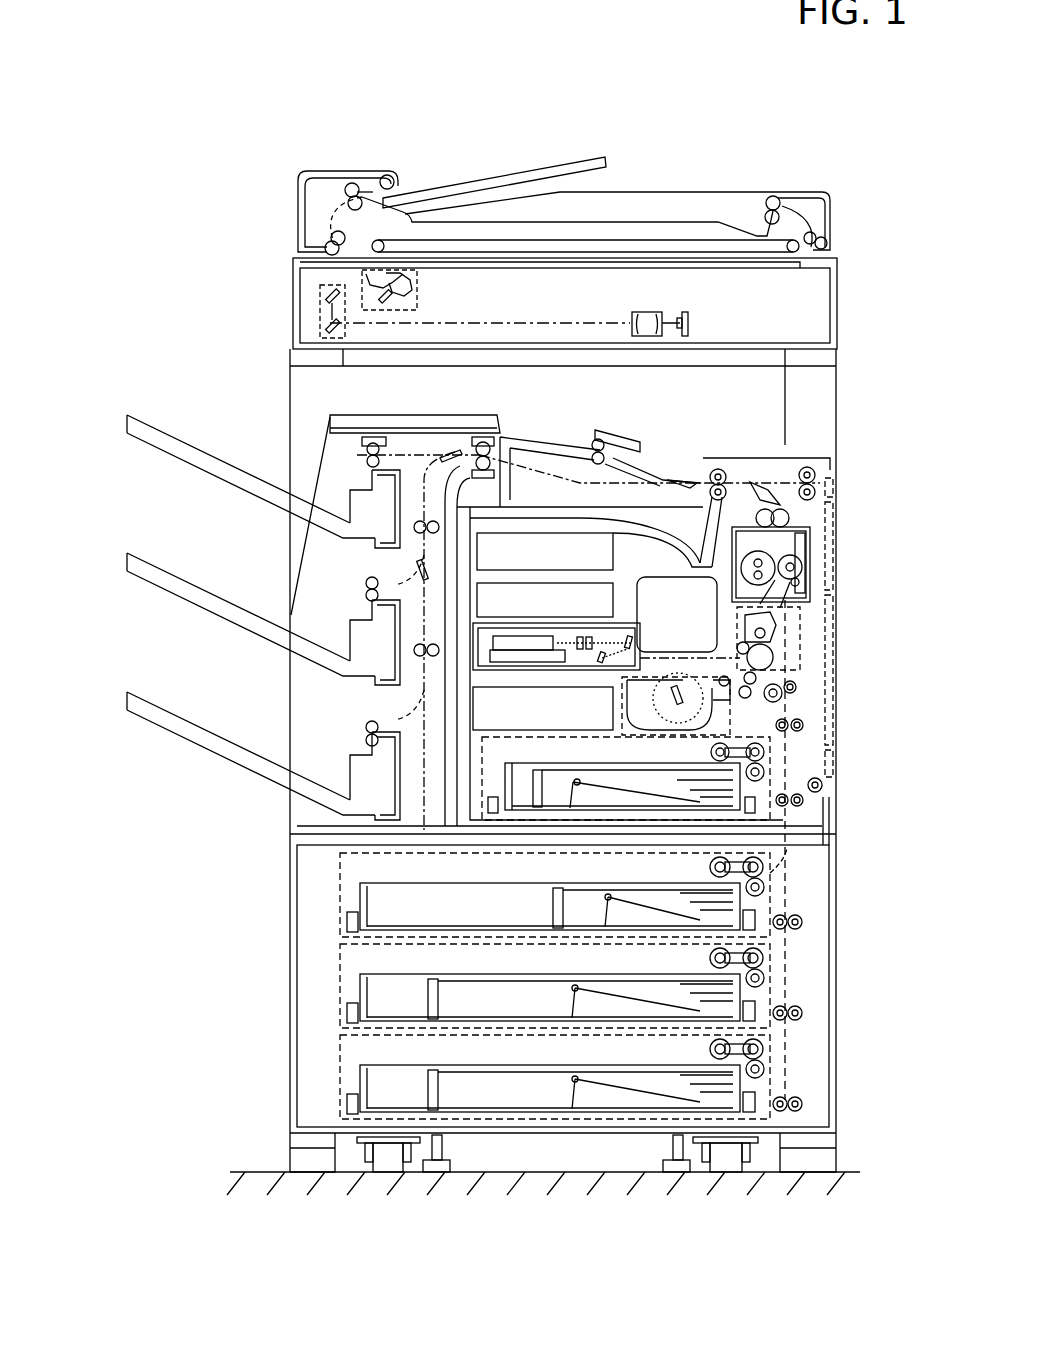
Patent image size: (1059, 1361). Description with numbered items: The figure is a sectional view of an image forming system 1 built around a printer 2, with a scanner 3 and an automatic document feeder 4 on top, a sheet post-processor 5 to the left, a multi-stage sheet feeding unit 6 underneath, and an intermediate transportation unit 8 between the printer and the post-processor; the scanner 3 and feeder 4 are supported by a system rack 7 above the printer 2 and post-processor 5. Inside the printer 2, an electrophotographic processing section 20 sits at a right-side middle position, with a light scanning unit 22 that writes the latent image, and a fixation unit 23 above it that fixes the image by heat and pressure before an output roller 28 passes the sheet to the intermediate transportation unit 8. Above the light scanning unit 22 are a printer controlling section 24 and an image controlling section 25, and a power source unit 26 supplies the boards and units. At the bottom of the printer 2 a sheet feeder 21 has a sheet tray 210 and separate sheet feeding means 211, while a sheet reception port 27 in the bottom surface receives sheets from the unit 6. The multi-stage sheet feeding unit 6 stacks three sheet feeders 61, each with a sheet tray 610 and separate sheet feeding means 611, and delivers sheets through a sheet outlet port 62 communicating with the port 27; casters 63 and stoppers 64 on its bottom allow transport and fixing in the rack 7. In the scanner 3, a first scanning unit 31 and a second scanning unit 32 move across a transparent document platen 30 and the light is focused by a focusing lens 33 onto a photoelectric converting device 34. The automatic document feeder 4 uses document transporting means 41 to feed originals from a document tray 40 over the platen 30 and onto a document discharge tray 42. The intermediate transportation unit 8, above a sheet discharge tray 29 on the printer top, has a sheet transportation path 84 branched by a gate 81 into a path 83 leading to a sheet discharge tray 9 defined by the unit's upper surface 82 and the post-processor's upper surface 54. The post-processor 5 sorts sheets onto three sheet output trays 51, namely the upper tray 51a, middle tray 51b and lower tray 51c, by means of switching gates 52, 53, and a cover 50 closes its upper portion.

The image forming system 1 is at (887, 65).
The printer 2 is at (866, 460).
The scanner 3 is at (856, 298).
The automatic document feeder 4 is at (771, 135).
The sheet post-processor 5 is at (253, 388).
The multi-stage sheet feeding unit 6 is at (866, 966).
The system rack 7 is at (838, 398).
The intermediate transportation unit 8 is at (621, 412).
The sheet discharge tray 9 is at (570, 375).
The electrophotographic processing section 20 is at (800, 634).
The sheet feeder 21 is at (773, 780).
The light scanning unit 22 is at (487, 623).
The fixation unit 23 is at (813, 543).
The printer controlling section 24 is at (613, 545).
The image controlling section 25 is at (616, 587).
The power source unit 26 is at (490, 680).
The sheet reception port 27 is at (793, 818).
The output roller 28 is at (726, 460).
The sheet discharge tray 29 is at (663, 532).
The document platen 30 is at (770, 267).
The first scanning unit 31 is at (418, 290).
The second scanning unit 32 is at (320, 302).
The focusing lens 33 is at (651, 312).
The photoelectric converting device 34 is at (690, 323).
The document tray 40 is at (528, 165).
The document transporting means 41 is at (318, 217).
The document discharge tray 42 is at (652, 218).
The discharge unit cover 50 is at (450, 448).
The sheet output trays 51 is at (76, 488).
The upper sheet output tray 51a is at (173, 458).
The middle sheet output tray 51b is at (127, 563).
The lower sheet output tray 51c is at (160, 707).
The switching gate 52 is at (440, 456).
The switching gate 53 is at (415, 568).
The upper surface of the sheet post-processor 54 is at (450, 430).
The sheet feeders 61 is at (770, 907).
The sheet outlet port 62 is at (797, 853).
The casters 63 is at (388, 1170).
The stoppers 64 is at (452, 1160).
The gate 81 is at (683, 478).
The upper surface of the intermediate transportation unit 82 is at (508, 437).
The sheet transportation path 83 is at (618, 450).
The sheet transportation path 84 is at (555, 472).
The sheet tray 210 is at (528, 763).
The separate sheet feeding means 211 is at (710, 750).
The sheet trays 610 is at (403, 885).
The separate sheet feeding means 611 is at (698, 865).